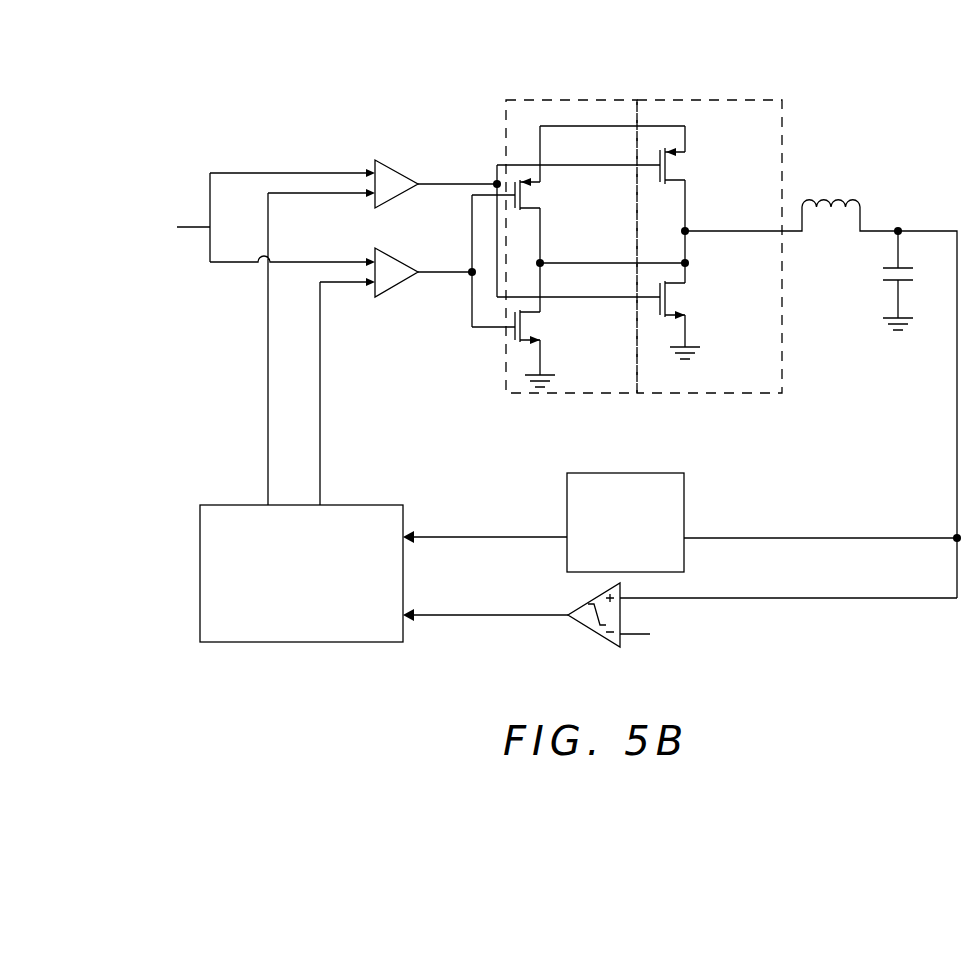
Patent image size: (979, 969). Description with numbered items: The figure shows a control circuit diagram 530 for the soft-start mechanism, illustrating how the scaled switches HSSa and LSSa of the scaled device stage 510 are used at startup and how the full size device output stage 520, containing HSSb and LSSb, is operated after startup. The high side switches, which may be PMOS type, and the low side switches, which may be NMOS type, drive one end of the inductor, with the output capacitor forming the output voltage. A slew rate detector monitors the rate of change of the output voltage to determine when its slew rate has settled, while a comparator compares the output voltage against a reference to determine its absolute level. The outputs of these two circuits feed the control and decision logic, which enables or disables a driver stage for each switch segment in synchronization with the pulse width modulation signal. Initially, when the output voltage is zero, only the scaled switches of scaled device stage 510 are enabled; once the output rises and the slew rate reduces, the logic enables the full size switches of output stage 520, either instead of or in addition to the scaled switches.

The scaled device stage 510 is at (578, 100).
The output stage 520 is at (713, 100).
The control circuit diagram 530 is at (862, 110).